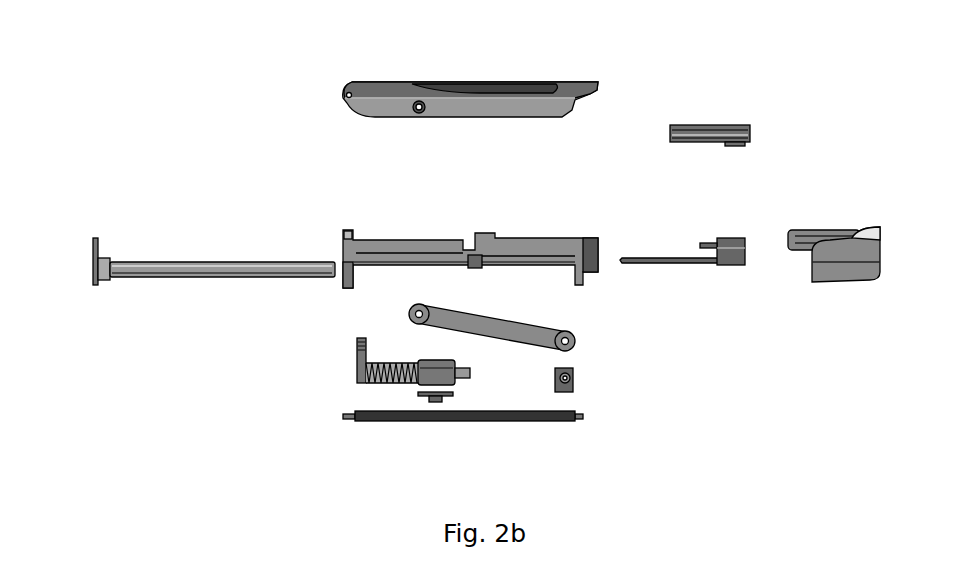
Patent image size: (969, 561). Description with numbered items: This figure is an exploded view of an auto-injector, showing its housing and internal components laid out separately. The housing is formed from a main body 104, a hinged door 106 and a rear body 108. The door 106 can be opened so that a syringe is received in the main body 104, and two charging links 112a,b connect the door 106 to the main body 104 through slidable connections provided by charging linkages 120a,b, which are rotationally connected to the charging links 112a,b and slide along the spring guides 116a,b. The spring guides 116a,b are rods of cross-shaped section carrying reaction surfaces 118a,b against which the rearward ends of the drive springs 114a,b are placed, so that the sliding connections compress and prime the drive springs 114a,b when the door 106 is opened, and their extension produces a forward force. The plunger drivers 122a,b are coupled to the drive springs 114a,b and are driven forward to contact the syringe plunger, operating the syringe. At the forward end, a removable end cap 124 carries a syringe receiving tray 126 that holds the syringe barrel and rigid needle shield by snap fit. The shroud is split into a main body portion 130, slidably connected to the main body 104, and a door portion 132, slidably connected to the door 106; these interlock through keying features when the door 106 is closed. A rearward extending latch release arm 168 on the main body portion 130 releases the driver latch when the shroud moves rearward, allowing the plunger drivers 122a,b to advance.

The hinged door 106 is at (360, 107).
The door portion 132 is at (718, 125).
The reaction surfaces 118a,b is at (95, 248).
The spring guides 116a,b is at (218, 265).
The main body 104 is at (365, 243).
The latch release arm 168 is at (683, 262).
The main body portion 130 is at (735, 263).
The syringe receiving tray 126 is at (838, 233).
The end cap 124 is at (875, 242).
The charging links 112a,b is at (570, 340).
The plunger drivers 122a,b is at (357, 345).
The drive springs 114a,b is at (358, 380).
The charging linkages 120a,b is at (573, 378).
The rear body 108 is at (365, 422).